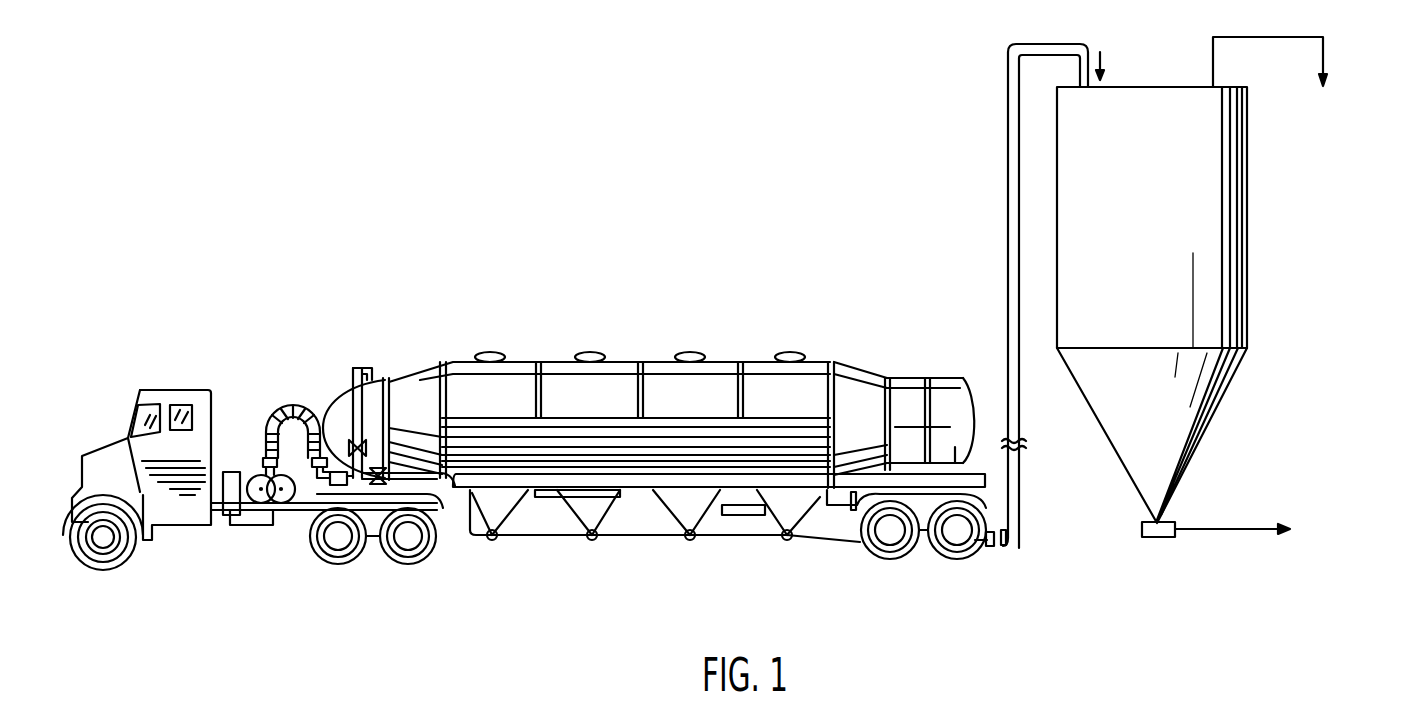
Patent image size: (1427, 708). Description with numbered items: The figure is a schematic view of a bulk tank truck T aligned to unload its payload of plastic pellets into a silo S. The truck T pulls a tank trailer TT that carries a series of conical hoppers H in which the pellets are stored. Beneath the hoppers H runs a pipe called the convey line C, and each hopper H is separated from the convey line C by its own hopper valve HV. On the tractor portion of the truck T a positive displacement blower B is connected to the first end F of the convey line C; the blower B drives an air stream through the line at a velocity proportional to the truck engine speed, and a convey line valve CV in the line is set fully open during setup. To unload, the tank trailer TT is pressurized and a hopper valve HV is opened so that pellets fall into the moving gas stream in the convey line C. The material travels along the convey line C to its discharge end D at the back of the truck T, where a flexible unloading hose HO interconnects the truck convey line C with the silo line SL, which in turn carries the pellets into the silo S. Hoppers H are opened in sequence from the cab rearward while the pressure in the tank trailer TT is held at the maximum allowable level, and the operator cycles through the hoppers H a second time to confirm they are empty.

The tank truck T is at (262, 347).
The tank trailer TT is at (752, 357).
The conical hoppers H is at (618, 388).
The convey line valve CV is at (378, 468).
The positive displacement blower B is at (292, 505).
The first end of the convey line F is at (368, 486).
The convey line C is at (523, 540).
The hopper valve HV is at (591, 540).
The discharge end of the convey line D is at (993, 547).
The flexible unloading hose HO is at (1022, 545).
The silo line SL is at (1007, 352).
The silo S is at (1247, 313).